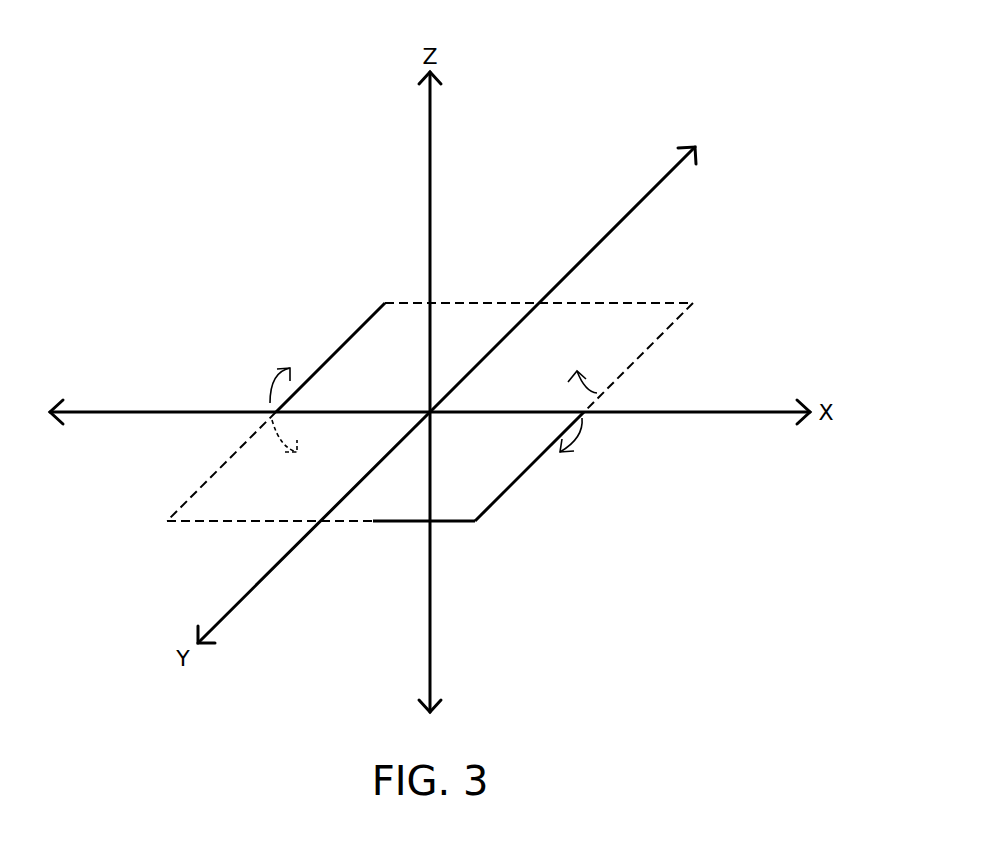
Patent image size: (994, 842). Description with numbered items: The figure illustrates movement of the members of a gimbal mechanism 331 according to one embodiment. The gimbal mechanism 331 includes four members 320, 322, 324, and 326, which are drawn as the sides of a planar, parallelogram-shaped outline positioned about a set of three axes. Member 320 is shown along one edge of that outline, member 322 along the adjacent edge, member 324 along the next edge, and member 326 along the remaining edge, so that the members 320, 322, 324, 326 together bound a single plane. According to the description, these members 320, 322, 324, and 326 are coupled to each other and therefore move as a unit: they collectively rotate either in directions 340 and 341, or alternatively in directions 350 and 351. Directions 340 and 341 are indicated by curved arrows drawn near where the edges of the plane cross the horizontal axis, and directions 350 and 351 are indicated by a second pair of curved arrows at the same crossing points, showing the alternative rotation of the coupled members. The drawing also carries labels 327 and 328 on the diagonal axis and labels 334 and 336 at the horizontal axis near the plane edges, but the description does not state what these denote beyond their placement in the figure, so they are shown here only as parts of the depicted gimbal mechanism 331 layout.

The member 320 is at (655, 303).
The member 322 is at (507, 490).
The member 324 is at (345, 522).
The member 326 is at (363, 323).
The Y axis lower portion 327 is at (243, 600).
The Y axis upper portion 328 is at (607, 231).
The gimbal mechanism 331 is at (623, 70).
The angle between X axis and plane edge 334 is at (523, 412).
The angle between X axis and plane edge 336 is at (368, 411).
The direction 340 is at (598, 393).
The direction 341 is at (280, 443).
The direction 350 is at (582, 430).
The direction 351 is at (272, 388).